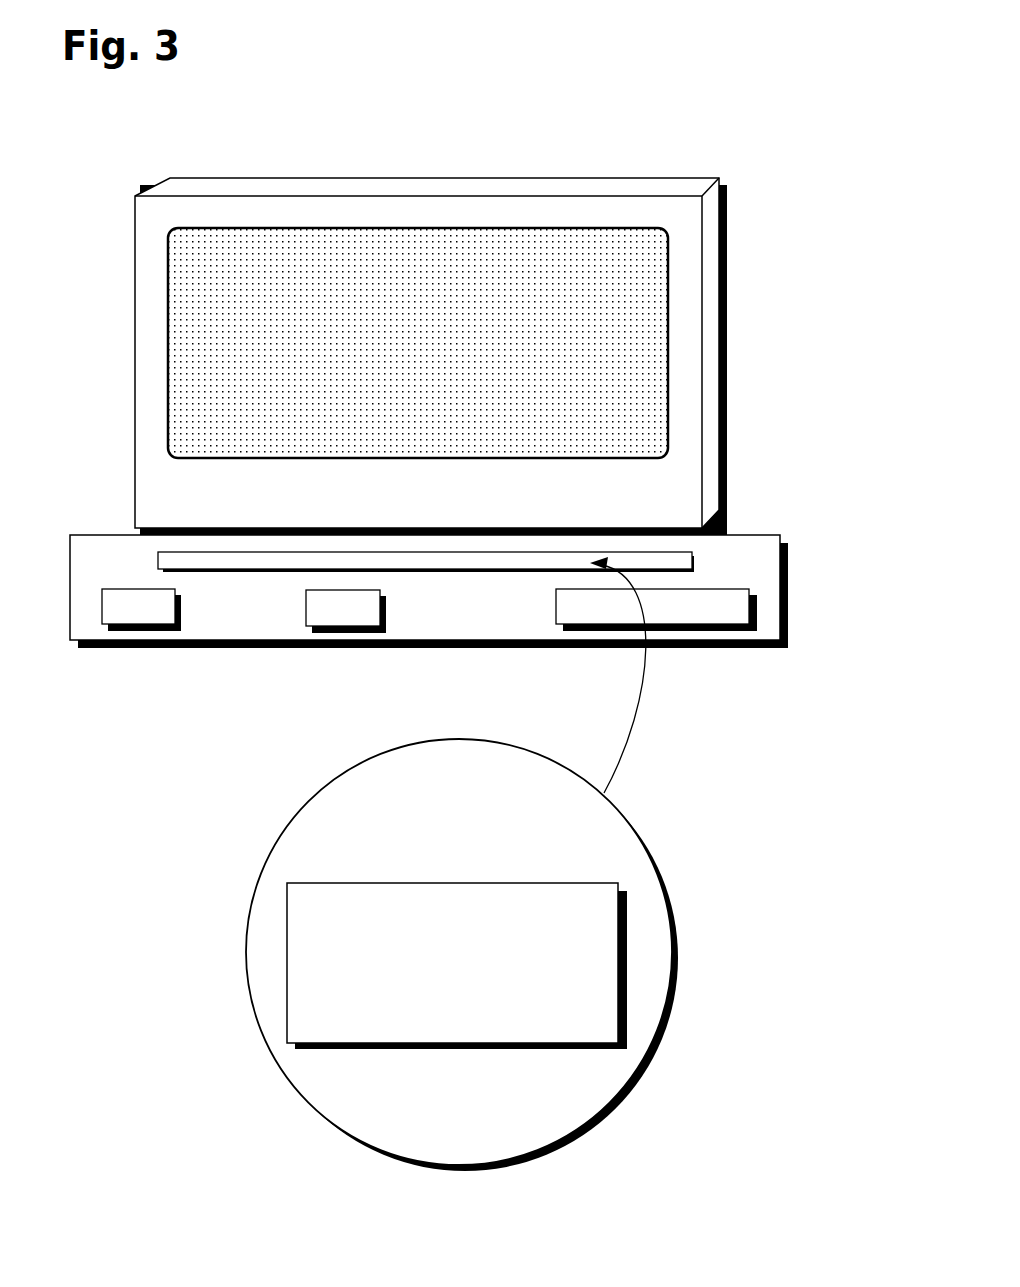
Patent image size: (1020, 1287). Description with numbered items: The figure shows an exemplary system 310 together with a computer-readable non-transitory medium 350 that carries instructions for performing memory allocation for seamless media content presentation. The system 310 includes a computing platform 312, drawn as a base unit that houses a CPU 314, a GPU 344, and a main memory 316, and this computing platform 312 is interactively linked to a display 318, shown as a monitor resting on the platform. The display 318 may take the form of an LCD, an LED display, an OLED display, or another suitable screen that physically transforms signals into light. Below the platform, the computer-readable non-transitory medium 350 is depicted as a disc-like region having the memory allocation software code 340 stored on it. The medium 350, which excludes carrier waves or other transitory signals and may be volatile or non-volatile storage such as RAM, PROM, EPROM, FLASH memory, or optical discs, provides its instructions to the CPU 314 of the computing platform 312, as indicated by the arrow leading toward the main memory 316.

The system 310 is at (842, 83).
The computing platform 312 is at (789, 590).
The CPU 314 is at (181, 603).
The main memory 316 is at (716, 589).
The display 318 is at (516, 178).
The memory allocation software code 340 is at (471, 1052).
The GPU 344 is at (386, 608).
The computer-readable non-transitory medium 350 is at (247, 945).